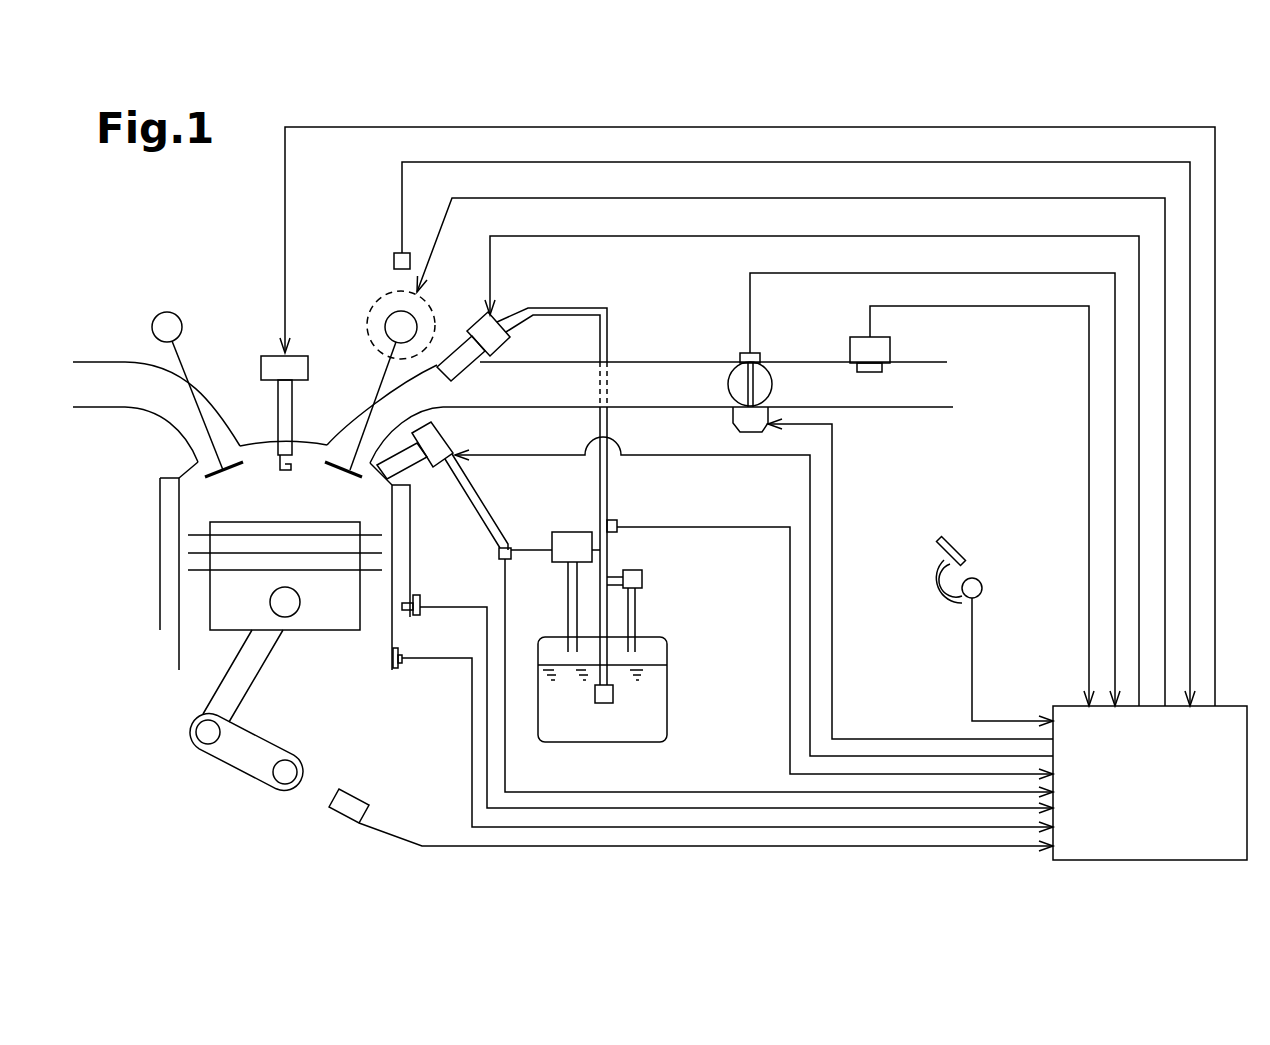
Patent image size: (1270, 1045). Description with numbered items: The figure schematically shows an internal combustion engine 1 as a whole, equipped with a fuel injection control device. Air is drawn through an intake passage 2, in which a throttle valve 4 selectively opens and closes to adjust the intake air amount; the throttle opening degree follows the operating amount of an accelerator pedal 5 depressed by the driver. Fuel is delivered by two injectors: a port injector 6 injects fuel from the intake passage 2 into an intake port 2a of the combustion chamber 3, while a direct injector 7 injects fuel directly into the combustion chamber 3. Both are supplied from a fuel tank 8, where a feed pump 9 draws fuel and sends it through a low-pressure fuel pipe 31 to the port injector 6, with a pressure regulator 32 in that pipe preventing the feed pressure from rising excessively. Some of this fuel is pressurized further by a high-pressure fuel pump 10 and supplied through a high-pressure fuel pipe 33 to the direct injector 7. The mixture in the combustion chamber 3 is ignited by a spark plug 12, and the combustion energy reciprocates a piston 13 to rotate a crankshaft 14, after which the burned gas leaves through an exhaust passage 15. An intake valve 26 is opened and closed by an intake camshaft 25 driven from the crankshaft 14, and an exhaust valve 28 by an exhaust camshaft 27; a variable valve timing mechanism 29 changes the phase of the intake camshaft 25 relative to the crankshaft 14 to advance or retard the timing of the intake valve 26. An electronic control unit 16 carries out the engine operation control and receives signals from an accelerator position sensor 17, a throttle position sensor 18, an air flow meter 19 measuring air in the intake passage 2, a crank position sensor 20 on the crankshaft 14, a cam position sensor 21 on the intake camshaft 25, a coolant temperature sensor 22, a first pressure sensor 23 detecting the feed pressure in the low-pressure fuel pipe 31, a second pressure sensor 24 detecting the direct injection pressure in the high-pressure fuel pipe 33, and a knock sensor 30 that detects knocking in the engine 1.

The internal combustion engine 1 is at (125, 257).
The intake passage 2 is at (570, 402).
The intake port 2a is at (336, 440).
The combustion chamber 3 is at (207, 502).
The throttle valve 4 is at (766, 370).
The accelerator pedal 5 is at (938, 545).
The port injector 6 is at (470, 328).
The direct injector 7 is at (435, 470).
The fuel tank 8 is at (540, 742).
The feed pump 9 is at (613, 698).
The high-pressure fuel pump 10 is at (560, 532).
The spark plug 12 is at (278, 415).
The piston 13 is at (318, 630).
The crankshaft 14 is at (299, 758).
The exhaust passage 15 is at (100, 364).
The electronic control unit 16 is at (1050, 705).
The accelerator position sensor 17 is at (983, 580).
The throttle position sensor 18 is at (740, 355).
The air flow meter 19 is at (891, 350).
The crank position sensor 20 is at (355, 797).
The cam position sensor 21 is at (395, 260).
The coolant temperature sensor 22 is at (416, 615).
The first pressure sensor 23 is at (617, 526).
The second pressure sensor 24 is at (500, 556).
The intake camshaft 25 is at (385, 327).
The intake valve 26 is at (372, 405).
The exhaust camshaft 27 is at (182, 325).
The exhaust valve 28 is at (203, 398).
The variable valve timing mechanism 29 is at (370, 298).
The knock sensor 30 is at (400, 668).
The low-pressure fuel pipe 31 is at (608, 554).
The pressure regulator 32 is at (642, 579).
The high-pressure fuel pipe 33 is at (478, 516).